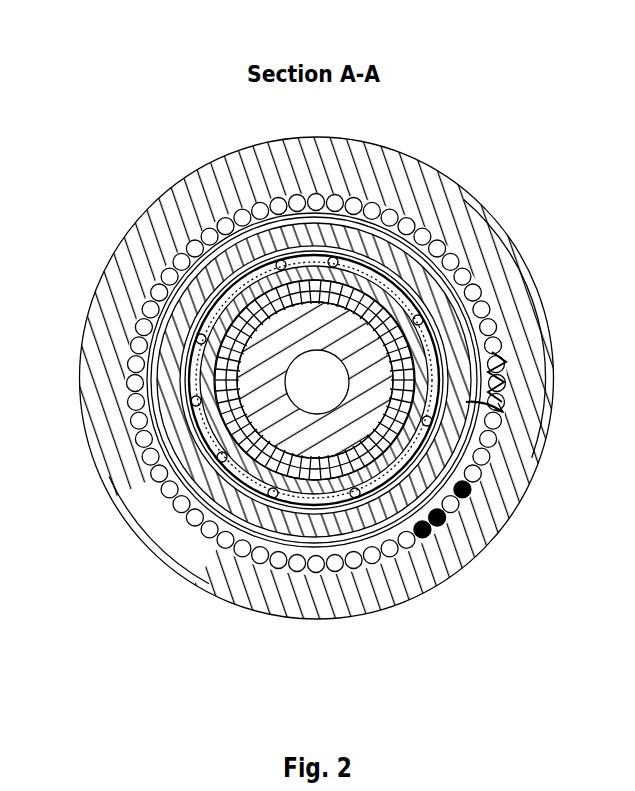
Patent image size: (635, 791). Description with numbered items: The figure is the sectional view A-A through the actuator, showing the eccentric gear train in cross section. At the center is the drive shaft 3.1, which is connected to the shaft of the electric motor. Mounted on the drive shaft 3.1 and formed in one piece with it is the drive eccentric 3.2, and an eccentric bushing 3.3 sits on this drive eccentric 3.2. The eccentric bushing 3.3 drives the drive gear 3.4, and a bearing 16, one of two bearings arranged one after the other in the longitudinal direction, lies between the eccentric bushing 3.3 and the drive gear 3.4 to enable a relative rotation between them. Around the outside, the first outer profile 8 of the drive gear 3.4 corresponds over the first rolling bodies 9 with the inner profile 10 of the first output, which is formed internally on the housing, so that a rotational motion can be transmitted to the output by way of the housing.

The drive shaft 3.1 is at (308, 427).
The drive eccentric 3.2 is at (256, 430).
The eccentric bushing 3.3 is at (242, 463).
The drive gear 3.4 is at (348, 523).
The first outer profile 8 is at (493, 410).
The first rolling bodies 9 is at (462, 489).
The inner profile 10 is at (505, 380).
The bearing 16 is at (205, 445).